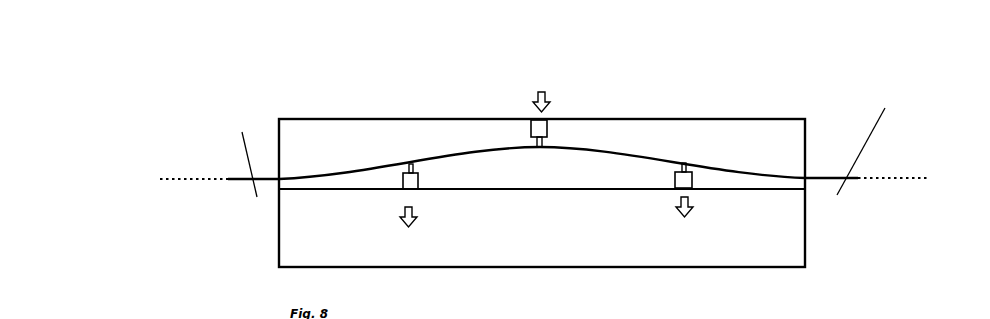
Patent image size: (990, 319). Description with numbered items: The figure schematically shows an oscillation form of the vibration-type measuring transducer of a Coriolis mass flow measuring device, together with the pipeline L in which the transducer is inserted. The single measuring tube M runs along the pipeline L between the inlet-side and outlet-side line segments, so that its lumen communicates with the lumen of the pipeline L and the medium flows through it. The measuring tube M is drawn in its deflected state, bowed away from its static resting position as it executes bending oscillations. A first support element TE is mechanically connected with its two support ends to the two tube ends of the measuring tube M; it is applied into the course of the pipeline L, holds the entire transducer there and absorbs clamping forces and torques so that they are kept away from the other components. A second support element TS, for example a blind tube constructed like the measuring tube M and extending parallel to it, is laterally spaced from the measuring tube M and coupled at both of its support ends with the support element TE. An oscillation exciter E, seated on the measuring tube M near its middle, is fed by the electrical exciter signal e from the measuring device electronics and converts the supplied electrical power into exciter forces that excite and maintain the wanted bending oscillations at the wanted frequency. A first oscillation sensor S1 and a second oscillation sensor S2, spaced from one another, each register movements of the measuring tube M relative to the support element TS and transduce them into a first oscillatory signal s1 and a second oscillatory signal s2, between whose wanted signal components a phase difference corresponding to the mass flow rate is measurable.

The first support element TE is at (797, 243).
The second support element TS is at (500, 190).
The pipeline L is at (545, 181).
The measuring tube M is at (360, 173).
The oscillation exciter E is at (532, 118).
The exciter signal e is at (541, 94).
The first oscillation sensor S1 is at (668, 192).
The second oscillation sensor S2 is at (405, 192).
The first oscillatory signal s1 is at (685, 220).
The second oscillatory signal s2 is at (409, 228).